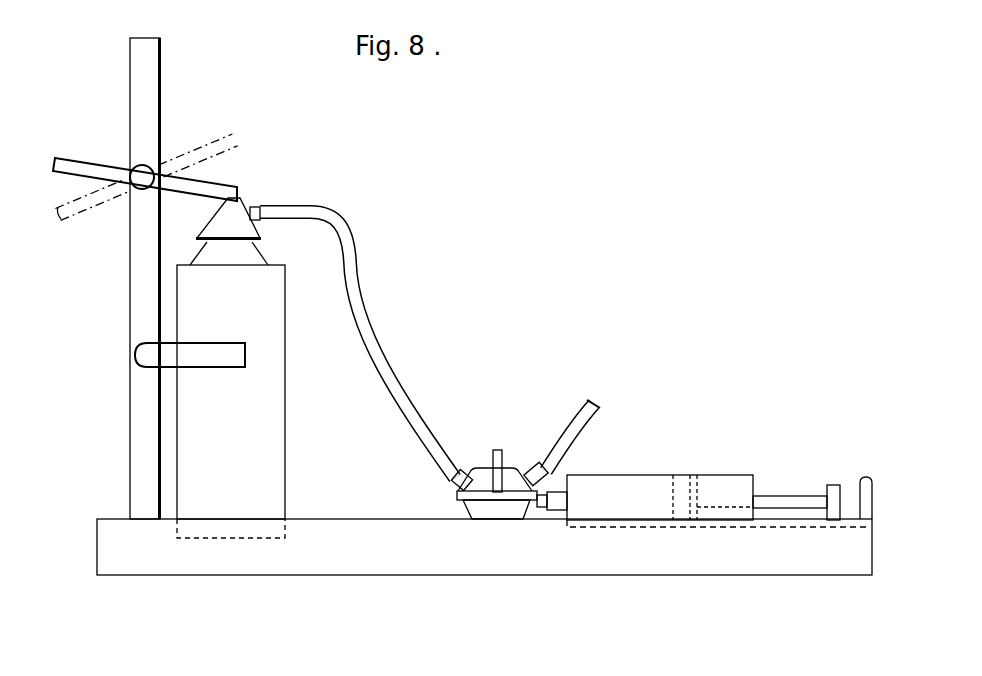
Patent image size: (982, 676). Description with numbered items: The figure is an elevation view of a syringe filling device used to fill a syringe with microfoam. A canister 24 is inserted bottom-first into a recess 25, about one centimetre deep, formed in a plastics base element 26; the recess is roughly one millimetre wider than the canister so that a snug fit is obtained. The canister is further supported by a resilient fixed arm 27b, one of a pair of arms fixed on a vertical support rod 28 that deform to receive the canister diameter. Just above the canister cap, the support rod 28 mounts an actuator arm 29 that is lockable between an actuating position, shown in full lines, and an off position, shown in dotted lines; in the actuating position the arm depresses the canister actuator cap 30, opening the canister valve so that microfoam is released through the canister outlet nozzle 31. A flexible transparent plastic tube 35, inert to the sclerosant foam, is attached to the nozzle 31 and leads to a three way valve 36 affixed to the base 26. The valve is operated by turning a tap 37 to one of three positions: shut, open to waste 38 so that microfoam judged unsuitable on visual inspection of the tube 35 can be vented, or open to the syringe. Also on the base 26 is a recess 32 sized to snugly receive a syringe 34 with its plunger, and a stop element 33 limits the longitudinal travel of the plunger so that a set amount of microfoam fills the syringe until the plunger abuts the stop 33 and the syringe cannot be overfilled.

The canister 24 is at (262, 443).
The recess 25 is at (218, 538).
The base element 26 is at (513, 548).
The resilient fixed arm 27b is at (148, 358).
The vertical support rod 28 is at (137, 313).
The pivoting arm 29 is at (95, 163).
The canister actuator cap 30 is at (230, 197).
The canister outlet nozzle 31 is at (252, 207).
The recess 32 is at (648, 528).
The stop element 33 is at (867, 477).
The syringe 34 is at (715, 477).
The flexible transparent plastic tube 35 is at (370, 265).
The three way valve 36 is at (520, 470).
The tap 37 is at (493, 452).
The waste 38 is at (582, 430).